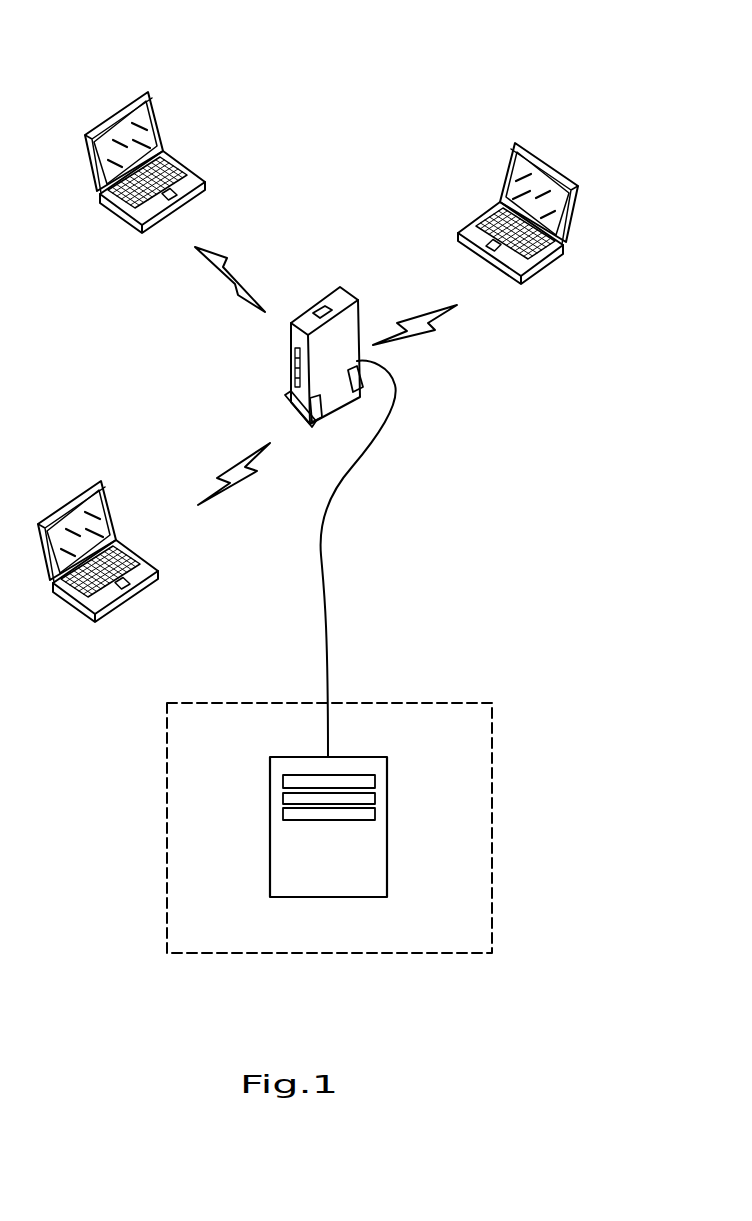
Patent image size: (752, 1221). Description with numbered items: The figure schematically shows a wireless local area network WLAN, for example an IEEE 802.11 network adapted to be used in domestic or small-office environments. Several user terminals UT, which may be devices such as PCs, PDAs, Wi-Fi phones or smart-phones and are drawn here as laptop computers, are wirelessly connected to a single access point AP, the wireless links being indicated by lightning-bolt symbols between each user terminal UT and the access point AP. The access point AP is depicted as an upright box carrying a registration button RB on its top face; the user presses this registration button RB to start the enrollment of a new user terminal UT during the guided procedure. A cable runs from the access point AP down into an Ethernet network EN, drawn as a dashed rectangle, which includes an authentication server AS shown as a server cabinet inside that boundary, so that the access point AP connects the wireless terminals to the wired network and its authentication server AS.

The user terminal UT is at (162, 121).
The wireless local area network WLAN is at (385, 170).
The access point AP is at (290, 363).
The registration button RB is at (315, 313).
The Ethernet network EN is at (483, 763).
The authentication server AS is at (380, 808).